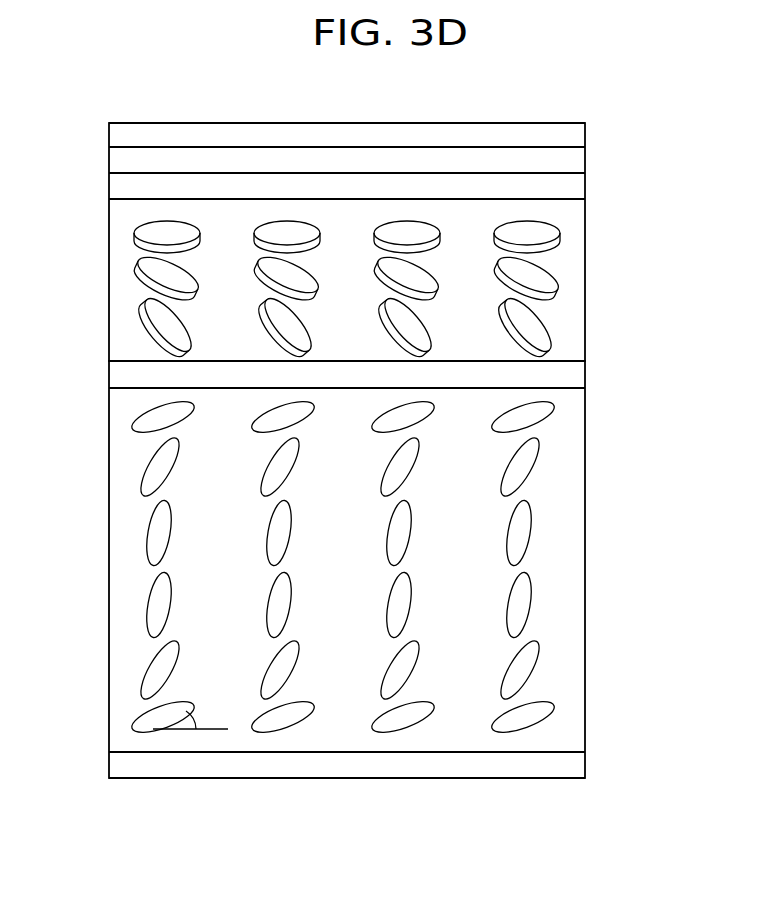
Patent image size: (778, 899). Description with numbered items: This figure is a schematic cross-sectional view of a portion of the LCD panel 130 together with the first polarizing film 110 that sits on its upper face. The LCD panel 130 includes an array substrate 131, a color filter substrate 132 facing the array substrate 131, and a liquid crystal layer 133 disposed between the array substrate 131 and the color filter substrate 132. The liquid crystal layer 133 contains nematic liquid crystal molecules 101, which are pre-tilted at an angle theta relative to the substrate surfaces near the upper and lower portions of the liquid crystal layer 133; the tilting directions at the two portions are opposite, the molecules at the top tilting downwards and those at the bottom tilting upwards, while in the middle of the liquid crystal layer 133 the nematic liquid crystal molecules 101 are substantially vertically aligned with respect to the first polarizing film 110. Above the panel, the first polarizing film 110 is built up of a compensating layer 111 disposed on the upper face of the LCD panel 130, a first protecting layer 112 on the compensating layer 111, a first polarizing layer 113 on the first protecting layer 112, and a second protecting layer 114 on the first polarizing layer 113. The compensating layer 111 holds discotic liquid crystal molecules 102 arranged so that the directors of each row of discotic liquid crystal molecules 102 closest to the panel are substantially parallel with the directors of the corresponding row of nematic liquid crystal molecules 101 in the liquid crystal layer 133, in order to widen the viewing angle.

The nematic liquid crystal molecule 101 is at (157, 670).
The discotic liquid crystal molecule 102 is at (142, 263).
The first polarizing film 110 is at (378, 240).
The compensating layer 111 is at (349, 281).
The first protecting layer 112 is at (570, 187).
The first polarizing layer 113 is at (570, 161).
The second protecting layer 114 is at (570, 135).
The LCD panel 130 is at (378, 570).
The array substrate 131 is at (384, 765).
The color filter substrate 132 is at (570, 377).
The liquid crystal layer 133 is at (349, 570).